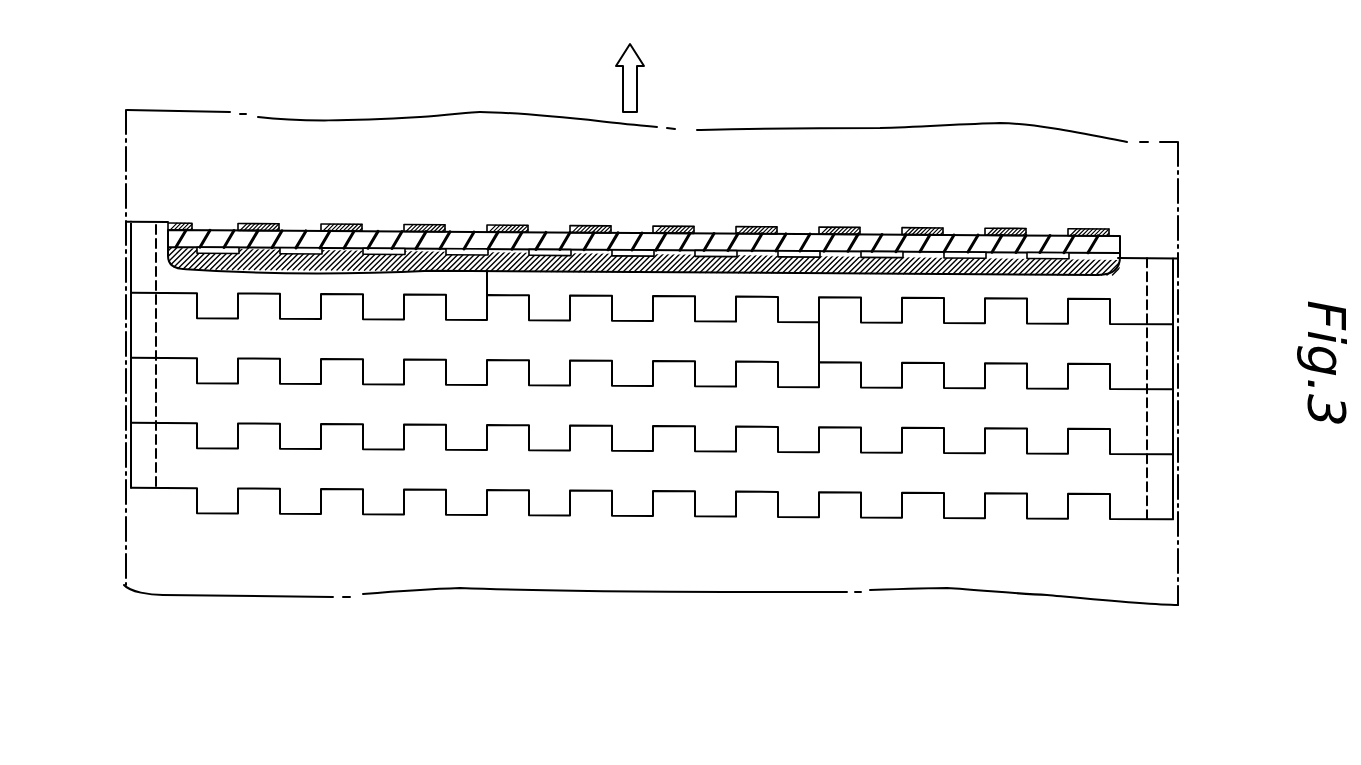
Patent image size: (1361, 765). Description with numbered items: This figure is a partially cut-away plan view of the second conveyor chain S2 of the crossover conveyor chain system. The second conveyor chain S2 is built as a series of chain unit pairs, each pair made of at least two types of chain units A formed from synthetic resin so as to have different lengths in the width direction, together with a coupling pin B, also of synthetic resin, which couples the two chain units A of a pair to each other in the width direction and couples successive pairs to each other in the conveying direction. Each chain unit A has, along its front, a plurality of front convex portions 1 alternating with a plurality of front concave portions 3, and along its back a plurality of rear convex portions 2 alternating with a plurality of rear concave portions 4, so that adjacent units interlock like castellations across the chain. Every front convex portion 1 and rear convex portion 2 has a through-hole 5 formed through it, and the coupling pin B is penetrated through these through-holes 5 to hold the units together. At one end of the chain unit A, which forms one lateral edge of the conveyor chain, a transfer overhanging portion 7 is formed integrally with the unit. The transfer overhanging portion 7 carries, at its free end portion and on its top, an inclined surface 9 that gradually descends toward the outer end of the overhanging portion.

The front convex portion 1 is at (180, 221).
The rear convex portion 2 is at (520, 227).
The front concave portion 3 is at (221, 243).
The rear concave portion 4 is at (558, 252).
The through-hole 5 is at (456, 242).
The transfer overhanging portion 7 is at (141, 269).
The inclined surface 9 is at (129, 250).
The chain unit A is at (385, 243).
The coupling pin B is at (790, 243).
The second conveyor chain S2 is at (806, 598).